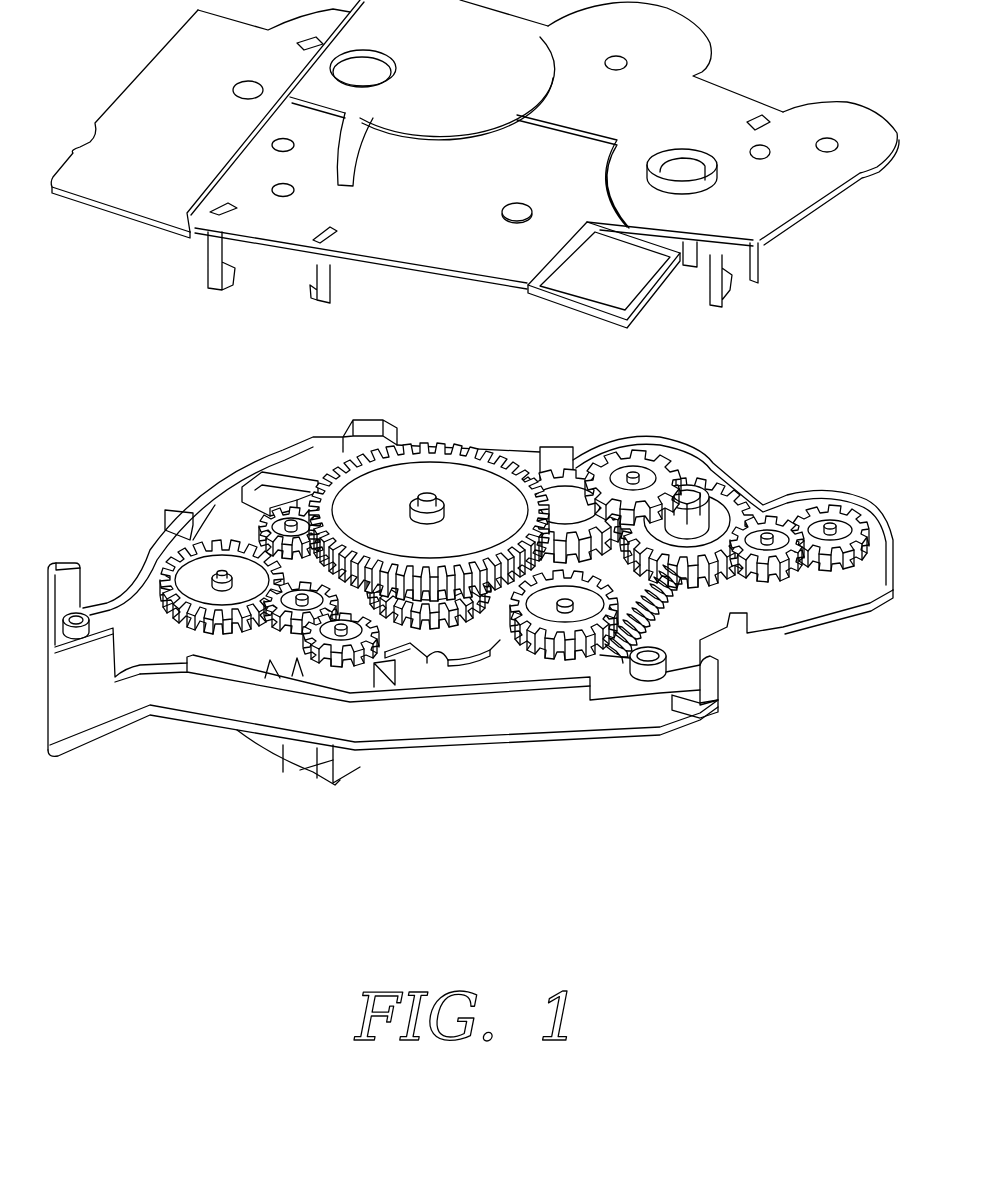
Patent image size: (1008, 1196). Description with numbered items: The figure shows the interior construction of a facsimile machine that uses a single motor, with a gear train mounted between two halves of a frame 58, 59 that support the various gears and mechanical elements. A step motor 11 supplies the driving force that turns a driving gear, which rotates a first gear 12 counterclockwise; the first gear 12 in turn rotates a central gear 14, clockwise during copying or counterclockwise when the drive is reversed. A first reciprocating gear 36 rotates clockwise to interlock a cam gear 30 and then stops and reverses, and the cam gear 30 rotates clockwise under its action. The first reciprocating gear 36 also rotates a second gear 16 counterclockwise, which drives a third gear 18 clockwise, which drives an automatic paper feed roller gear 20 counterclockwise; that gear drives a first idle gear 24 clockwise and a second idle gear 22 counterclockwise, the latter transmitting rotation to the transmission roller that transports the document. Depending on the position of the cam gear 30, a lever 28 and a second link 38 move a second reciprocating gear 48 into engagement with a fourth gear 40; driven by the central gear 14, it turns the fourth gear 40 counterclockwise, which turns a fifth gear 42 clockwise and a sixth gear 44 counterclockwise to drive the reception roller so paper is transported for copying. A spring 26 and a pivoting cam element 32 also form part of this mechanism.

The step motor 11 is at (303, 750).
The first gear 12 is at (455, 482).
The central gear 14 is at (413, 593).
The second gear 16 is at (550, 467).
The third gear 18 is at (680, 472).
The automatic paper feed roller gear 20 is at (722, 497).
The second idle gear 22 is at (832, 523).
The first idle gear 24 is at (768, 538).
The spring 26 is at (705, 708).
The lever 28 is at (612, 665).
The cam gear 30 is at (548, 578).
The pivoting cam element 32 is at (493, 598).
The first reciprocating gear 36 is at (564, 612).
The second link 38 is at (442, 640).
The fourth gear 40 is at (335, 630).
The fifth gear 42 is at (283, 605).
The sixth gear 44 is at (193, 573).
The second reciprocating gear 48 is at (206, 540).
The frame half 58 is at (847, 117).
The frame half 59 is at (783, 605).